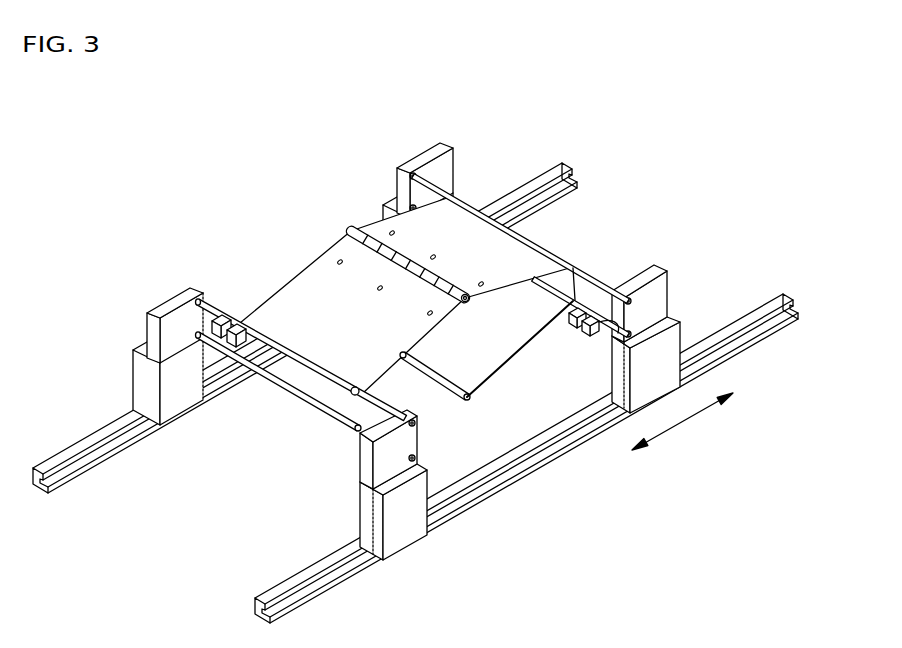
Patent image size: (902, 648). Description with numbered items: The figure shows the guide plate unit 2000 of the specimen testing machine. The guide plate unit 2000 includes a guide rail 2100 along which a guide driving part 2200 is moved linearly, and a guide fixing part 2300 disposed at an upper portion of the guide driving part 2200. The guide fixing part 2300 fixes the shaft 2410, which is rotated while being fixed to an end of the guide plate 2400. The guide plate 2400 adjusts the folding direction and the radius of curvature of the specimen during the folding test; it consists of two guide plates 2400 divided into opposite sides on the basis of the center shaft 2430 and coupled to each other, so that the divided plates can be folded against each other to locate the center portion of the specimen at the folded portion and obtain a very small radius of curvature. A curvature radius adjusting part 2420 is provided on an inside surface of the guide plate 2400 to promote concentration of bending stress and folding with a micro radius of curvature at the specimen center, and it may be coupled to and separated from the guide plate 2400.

The guide plate unit 2000 is at (444, 373).
The guide rail 2100 is at (740, 333).
The guide driving part 2200 is at (405, 536).
The guide fixing part 2300 is at (659, 297).
The guide plate 2400 is at (462, 238).
The shaft 2410 is at (592, 266).
The curvature radius adjusting part 2420 is at (469, 300).
The center shaft 2430 is at (470, 396).